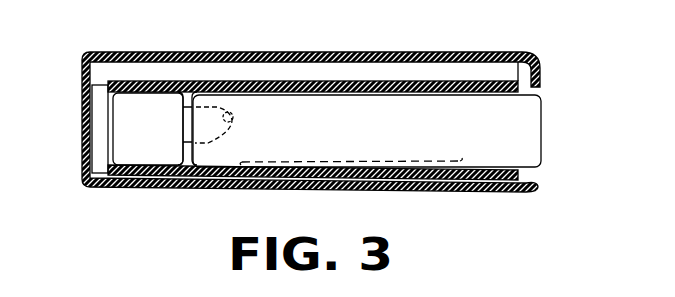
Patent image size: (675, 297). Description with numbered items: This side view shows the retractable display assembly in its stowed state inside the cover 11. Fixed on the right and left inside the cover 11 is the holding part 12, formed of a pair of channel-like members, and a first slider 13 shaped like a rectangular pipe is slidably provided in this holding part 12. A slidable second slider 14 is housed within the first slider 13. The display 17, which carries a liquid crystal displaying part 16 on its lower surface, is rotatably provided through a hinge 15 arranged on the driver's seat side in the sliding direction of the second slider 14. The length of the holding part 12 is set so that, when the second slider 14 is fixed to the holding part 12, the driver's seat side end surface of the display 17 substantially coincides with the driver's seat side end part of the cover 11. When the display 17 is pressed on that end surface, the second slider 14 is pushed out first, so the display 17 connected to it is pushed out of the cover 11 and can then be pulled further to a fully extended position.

The cover 11 is at (452, 52).
The holding part 12 is at (351, 73).
The first slider 13 is at (277, 81).
The second slider 14 is at (147, 157).
The hinge 15 is at (203, 82).
The liquid crystal displaying part 16 is at (325, 165).
The display 17 is at (527, 123).